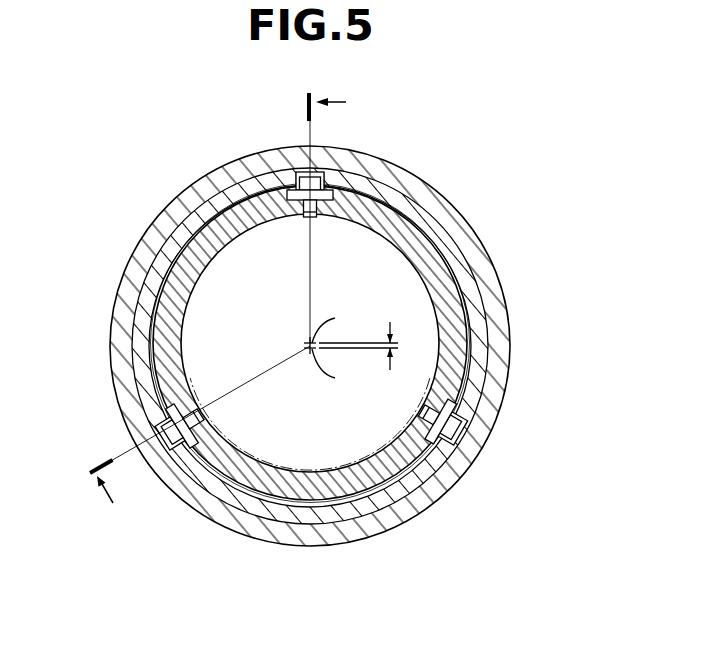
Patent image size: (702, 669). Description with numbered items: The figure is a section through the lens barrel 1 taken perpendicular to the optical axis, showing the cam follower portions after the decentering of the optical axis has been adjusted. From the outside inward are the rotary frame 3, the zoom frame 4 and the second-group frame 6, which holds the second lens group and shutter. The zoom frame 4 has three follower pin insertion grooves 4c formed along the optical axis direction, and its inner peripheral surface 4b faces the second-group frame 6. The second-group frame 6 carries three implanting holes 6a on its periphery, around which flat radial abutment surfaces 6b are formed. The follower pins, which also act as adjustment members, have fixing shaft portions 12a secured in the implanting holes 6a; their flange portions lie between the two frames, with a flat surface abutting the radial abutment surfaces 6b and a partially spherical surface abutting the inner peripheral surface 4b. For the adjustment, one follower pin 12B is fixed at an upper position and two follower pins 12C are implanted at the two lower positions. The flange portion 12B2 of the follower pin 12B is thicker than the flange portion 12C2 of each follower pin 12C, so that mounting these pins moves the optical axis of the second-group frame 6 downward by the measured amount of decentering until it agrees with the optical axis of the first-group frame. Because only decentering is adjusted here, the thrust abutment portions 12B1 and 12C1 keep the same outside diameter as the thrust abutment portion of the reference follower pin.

The lens barrel 1 is at (90, 272).
The rotary frame 3 is at (157, 217).
The zoom frame 4 is at (330, 324).
The inner peripheral surface 4b is at (462, 310).
The follower pin insertion grooves 4c is at (290, 170).
The second-group frame 6 is at (331, 320).
The implanting holes 6a is at (322, 212).
The radial abutment surfaces 6b is at (286, 196).
The follower pin 12B is at (399, 145).
The thrust abutment portion 12B1 is at (333, 188).
The flange portion 12B2 is at (331, 198).
The follower pins 12C is at (306, 467).
The thrust abutment portion 12C1 is at (180, 458).
The flange portion 12C2 is at (106, 401).
The fixing shaft portions 12a is at (311, 317).